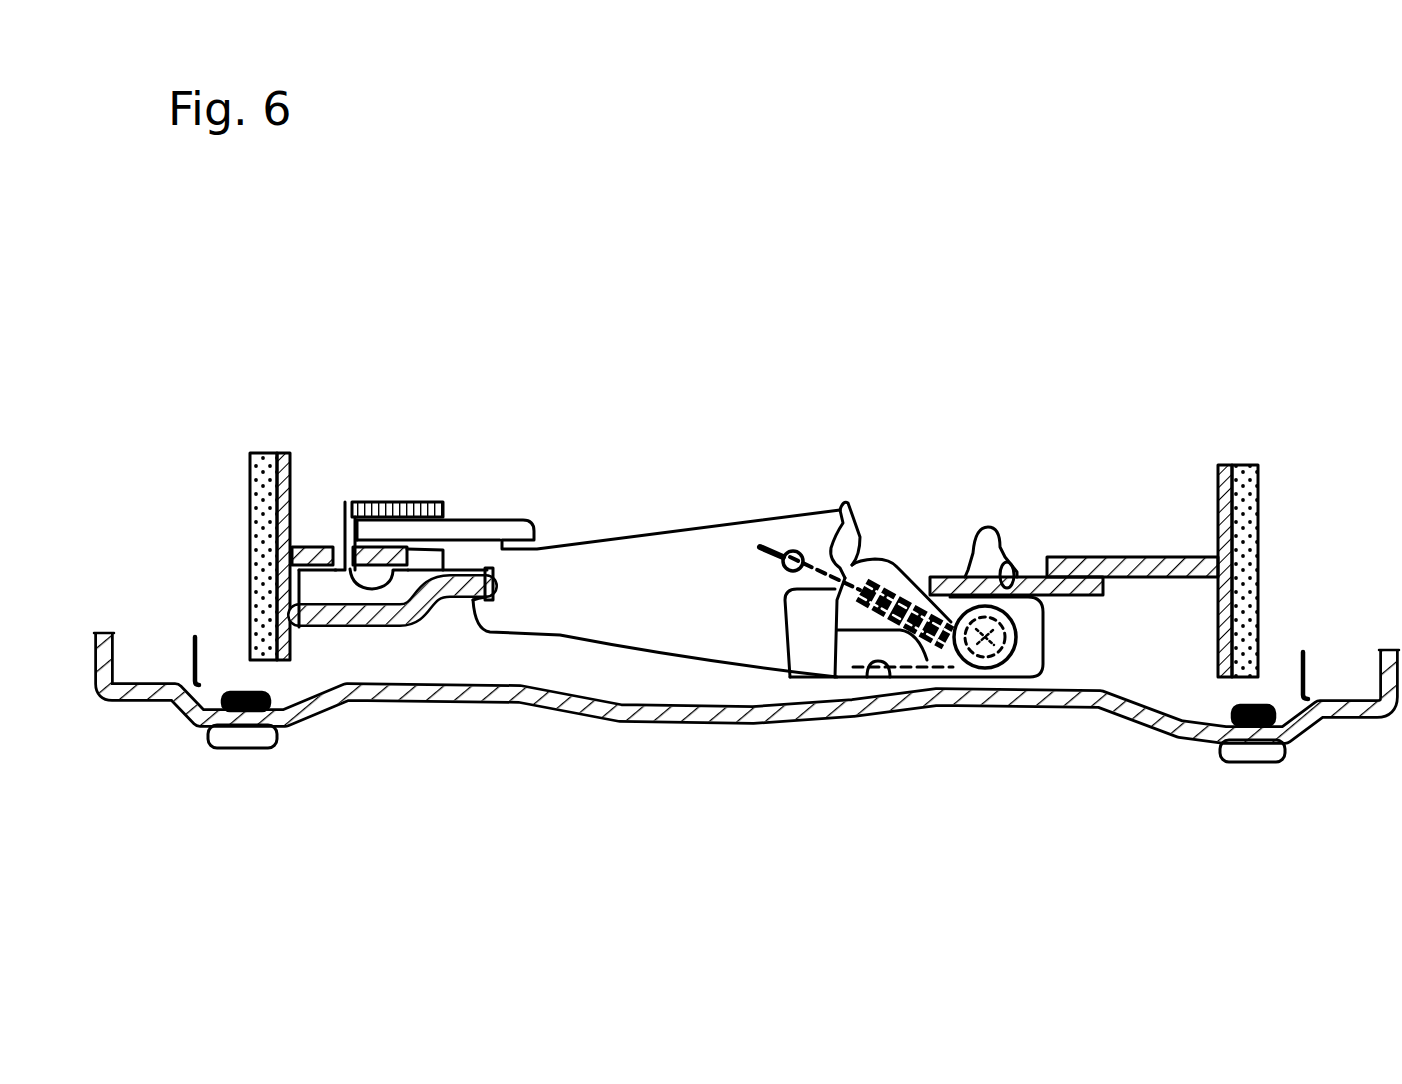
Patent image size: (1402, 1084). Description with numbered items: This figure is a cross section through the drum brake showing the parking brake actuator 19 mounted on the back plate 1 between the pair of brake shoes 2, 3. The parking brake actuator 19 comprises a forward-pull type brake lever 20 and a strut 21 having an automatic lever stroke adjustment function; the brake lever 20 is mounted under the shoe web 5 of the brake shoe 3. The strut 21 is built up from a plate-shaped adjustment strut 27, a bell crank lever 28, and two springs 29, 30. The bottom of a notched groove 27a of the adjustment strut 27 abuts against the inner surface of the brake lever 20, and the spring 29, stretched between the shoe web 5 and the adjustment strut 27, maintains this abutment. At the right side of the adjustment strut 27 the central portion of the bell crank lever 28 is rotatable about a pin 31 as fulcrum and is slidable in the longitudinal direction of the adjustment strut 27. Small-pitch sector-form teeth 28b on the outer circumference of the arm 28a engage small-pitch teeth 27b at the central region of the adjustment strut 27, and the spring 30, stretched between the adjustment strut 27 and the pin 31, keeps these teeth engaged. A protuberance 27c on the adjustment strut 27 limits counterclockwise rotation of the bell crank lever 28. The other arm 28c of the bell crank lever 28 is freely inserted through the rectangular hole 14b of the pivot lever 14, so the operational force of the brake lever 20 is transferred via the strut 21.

The back plate 1 is at (623, 720).
The brake shoe 2 is at (1236, 464).
The brake shoe 3 is at (272, 448).
The shoe web 5 is at (312, 545).
The pivot lever 14 is at (1062, 598).
The rectangular hole 14b is at (1005, 573).
The parking brake actuator 19 is at (427, 705).
The brake lever 20 is at (372, 628).
The strut 21 is at (555, 643).
The adjustment strut 27 is at (629, 603).
The notched groove 27a is at (472, 602).
The teeth 27b is at (852, 520).
The protuberance 27c is at (879, 679).
The bell crank lever 28 is at (885, 623).
The arm 28a is at (847, 655).
The teeth 28b is at (818, 607).
The arm 28c is at (985, 536).
The spring 29 is at (417, 500).
The spring 30 is at (925, 648).
The pin 31 is at (982, 648).